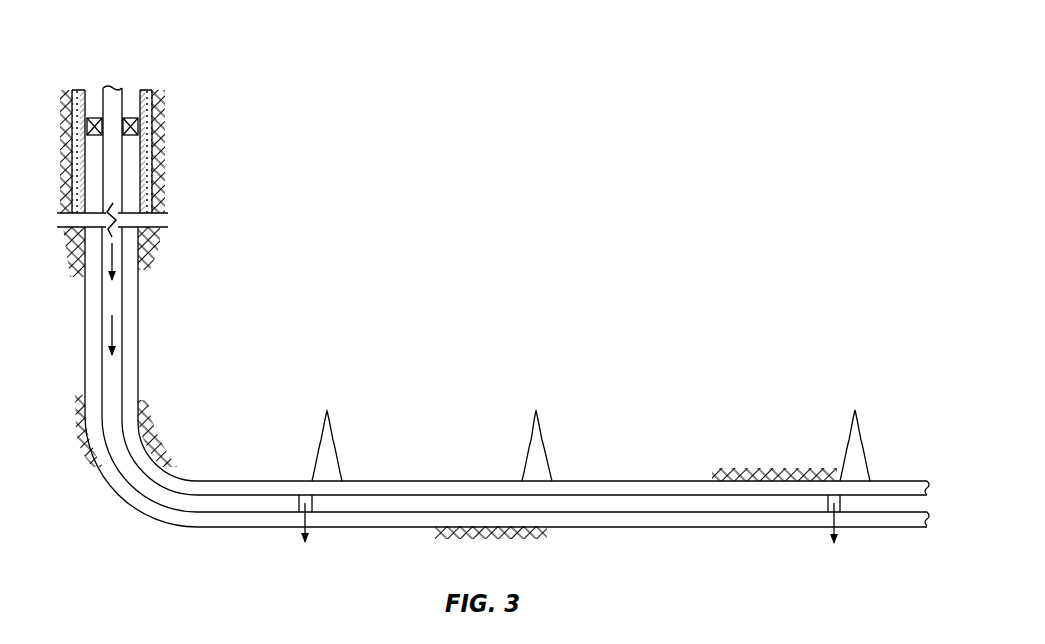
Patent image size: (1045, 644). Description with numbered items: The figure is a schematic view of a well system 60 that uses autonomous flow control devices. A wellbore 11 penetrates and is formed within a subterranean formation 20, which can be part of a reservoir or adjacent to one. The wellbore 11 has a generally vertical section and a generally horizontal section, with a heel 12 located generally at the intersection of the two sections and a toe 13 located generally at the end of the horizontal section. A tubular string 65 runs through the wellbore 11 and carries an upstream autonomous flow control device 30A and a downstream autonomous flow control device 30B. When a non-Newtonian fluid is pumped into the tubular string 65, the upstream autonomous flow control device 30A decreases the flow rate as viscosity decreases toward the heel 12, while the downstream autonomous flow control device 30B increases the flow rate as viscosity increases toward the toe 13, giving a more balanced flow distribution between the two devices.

The well system 60 is at (498, 332).
The wellbore 11 is at (138, 312).
The tubular string 65 is at (122, 373).
The heel 12 is at (137, 528).
The toe 13 is at (908, 468).
The subterranean formation 20 is at (487, 424).
The upstream autonomous flow control device 30A is at (301, 492).
The downstream autonomous flow control device 30B is at (832, 490).